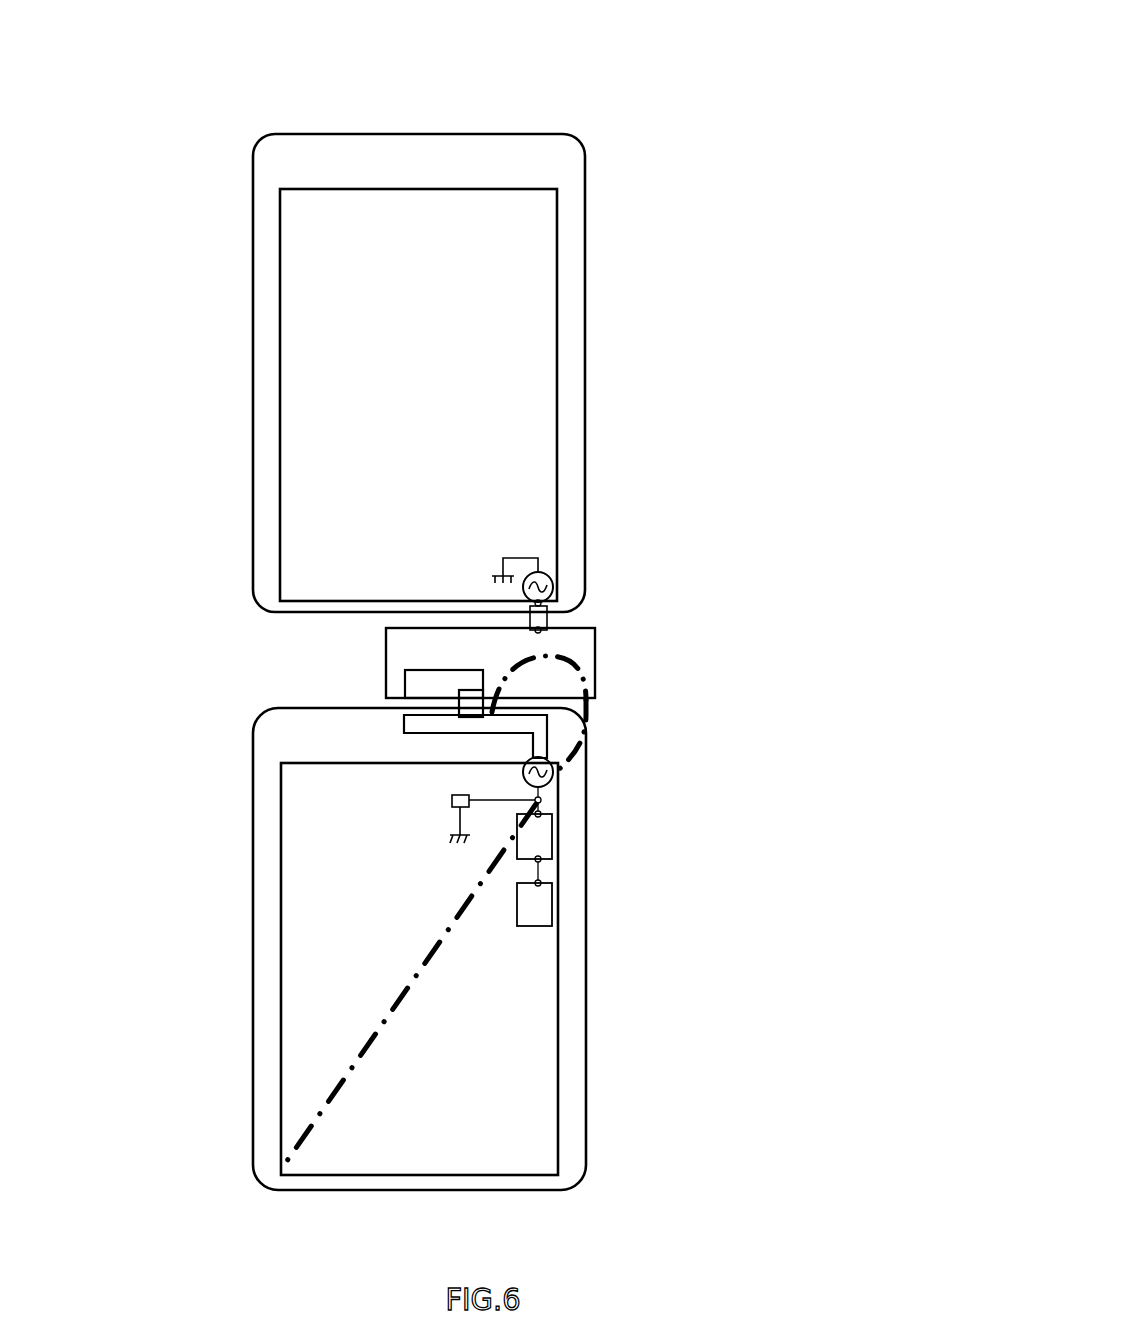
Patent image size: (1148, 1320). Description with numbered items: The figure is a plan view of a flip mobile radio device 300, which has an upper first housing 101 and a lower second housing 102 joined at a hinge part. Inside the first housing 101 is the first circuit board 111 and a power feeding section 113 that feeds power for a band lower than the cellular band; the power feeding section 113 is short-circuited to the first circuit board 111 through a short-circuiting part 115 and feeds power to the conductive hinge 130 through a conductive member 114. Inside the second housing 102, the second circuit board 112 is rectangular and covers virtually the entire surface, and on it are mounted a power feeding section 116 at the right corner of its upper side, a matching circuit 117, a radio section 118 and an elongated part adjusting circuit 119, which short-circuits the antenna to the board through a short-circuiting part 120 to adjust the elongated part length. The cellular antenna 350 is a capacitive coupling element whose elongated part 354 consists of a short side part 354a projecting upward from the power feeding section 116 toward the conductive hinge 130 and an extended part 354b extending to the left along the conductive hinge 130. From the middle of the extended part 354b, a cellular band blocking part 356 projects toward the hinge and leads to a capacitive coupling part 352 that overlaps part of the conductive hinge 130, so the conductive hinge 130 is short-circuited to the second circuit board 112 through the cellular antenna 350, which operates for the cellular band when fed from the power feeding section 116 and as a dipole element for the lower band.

The mobile radio device 300 is at (670, 53).
The first housing 101 is at (567, 172).
The first circuit board 111 is at (533, 248).
The short-circuiting part 115 is at (522, 558).
The power feeding section 113 is at (545, 573).
The conductive member 114 is at (547, 618).
The conductive hinge 130 is at (583, 650).
The capacitive coupling part 352 is at (443, 677).
The cellular band blocking part 356 is at (468, 705).
The elongated part 354 is at (611, 714).
The short side part 354a is at (540, 743).
The extended part 354b is at (508, 725).
The cellular antenna 350 is at (447, 737).
The second housing 102 is at (570, 1072).
The second circuit board 112 is at (315, 915).
The power feeding section 116 is at (552, 790).
The elongated part adjusting circuit 119 is at (452, 798).
The short-circuiting part 120 is at (452, 835).
The matching circuit 117 is at (547, 838).
The radio section 118 is at (547, 910).